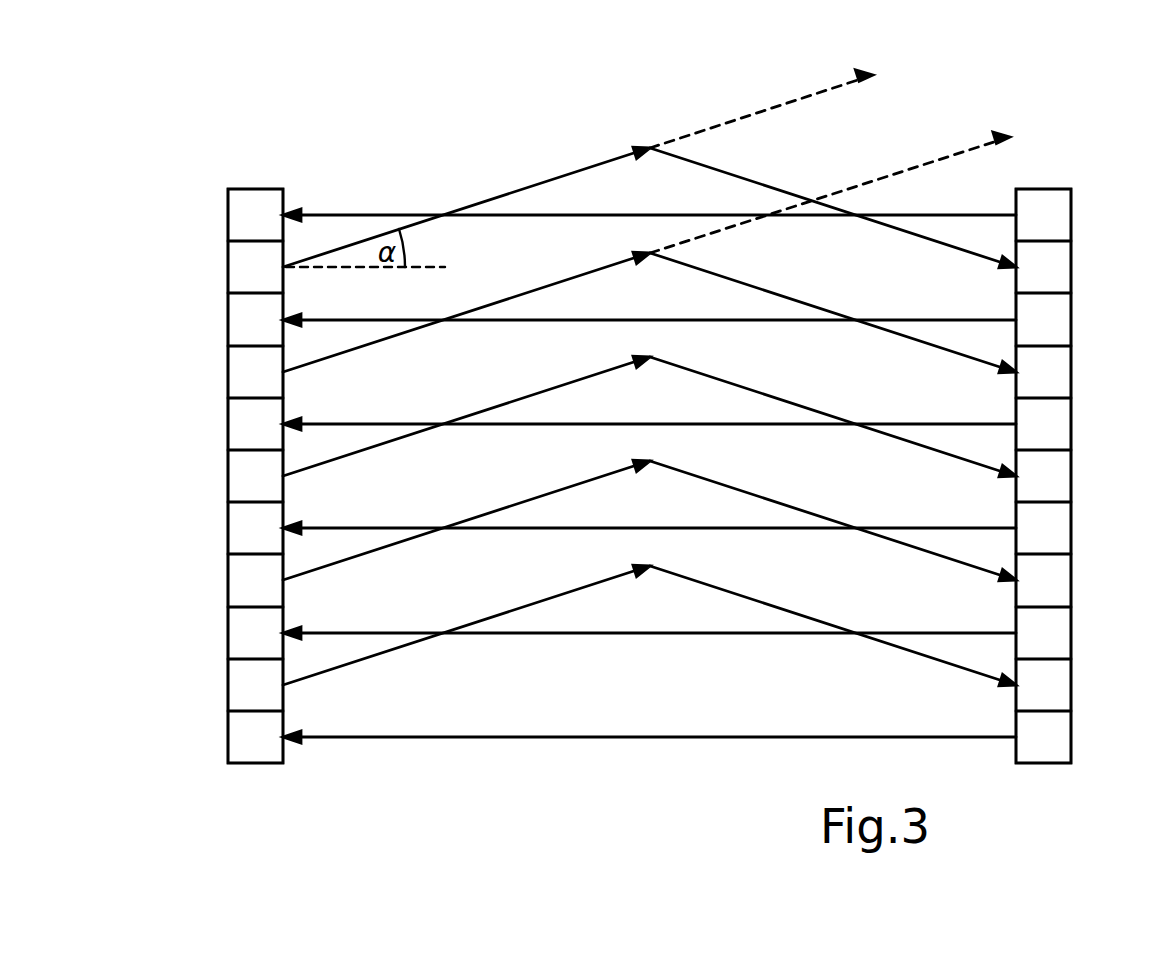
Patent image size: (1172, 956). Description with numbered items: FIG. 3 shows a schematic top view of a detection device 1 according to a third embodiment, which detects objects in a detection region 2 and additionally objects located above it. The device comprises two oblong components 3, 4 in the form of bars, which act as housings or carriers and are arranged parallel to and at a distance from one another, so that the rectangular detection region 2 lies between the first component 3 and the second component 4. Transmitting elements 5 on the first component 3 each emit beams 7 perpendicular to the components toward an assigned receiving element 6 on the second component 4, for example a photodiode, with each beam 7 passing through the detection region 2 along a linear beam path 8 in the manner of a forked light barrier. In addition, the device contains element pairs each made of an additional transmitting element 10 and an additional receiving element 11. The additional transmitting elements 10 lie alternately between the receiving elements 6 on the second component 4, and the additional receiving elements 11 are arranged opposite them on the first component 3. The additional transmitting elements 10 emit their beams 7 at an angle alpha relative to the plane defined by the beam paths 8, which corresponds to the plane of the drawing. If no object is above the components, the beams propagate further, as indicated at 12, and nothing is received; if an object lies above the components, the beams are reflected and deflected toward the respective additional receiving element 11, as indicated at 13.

The detection device 1 is at (266, 125).
The detection region 2 is at (877, 492).
The first component 3 is at (1043, 763).
The second component 4 is at (258, 763).
The transmitting element 5 is at (1052, 215).
The receiving element 6 is at (246, 217).
The beams 7 is at (533, 186).
The beam path 8 is at (643, 215).
The additional transmitting element 10 is at (248, 269).
The additional receiving element 11 is at (1052, 267).
The further propagating beam 12 is at (774, 106).
The reflected beam 13 is at (950, 242).